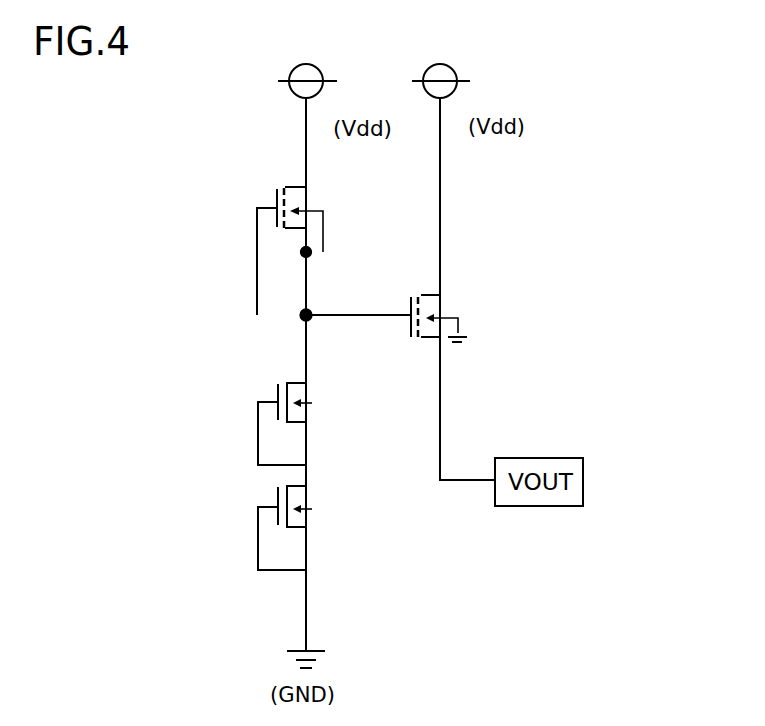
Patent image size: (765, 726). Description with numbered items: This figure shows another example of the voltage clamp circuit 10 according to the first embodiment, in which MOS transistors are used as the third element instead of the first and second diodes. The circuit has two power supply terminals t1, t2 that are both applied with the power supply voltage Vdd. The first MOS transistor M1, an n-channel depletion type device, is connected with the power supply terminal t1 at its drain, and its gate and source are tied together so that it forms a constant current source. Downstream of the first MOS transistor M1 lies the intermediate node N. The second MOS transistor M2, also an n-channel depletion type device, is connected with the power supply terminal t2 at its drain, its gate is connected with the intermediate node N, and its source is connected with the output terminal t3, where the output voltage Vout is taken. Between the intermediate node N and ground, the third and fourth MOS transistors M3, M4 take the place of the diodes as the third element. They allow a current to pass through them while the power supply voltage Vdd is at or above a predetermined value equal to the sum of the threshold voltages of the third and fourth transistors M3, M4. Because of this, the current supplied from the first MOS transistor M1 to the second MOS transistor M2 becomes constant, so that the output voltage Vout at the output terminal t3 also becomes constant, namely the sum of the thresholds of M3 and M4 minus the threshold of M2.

The power supply terminal t1 is at (306, 64).
The power supply terminal t2 is at (440, 64).
The output terminal t3 is at (551, 458).
The voltage clamp circuit 10 is at (488, 174).
The first MOS transistor M1 is at (314, 251).
The second MOS transistor M2 is at (464, 318).
The third MOS transistor M3 is at (306, 424).
The fourth MOS transistor M4 is at (306, 528).
The intermediate node N is at (303, 318).